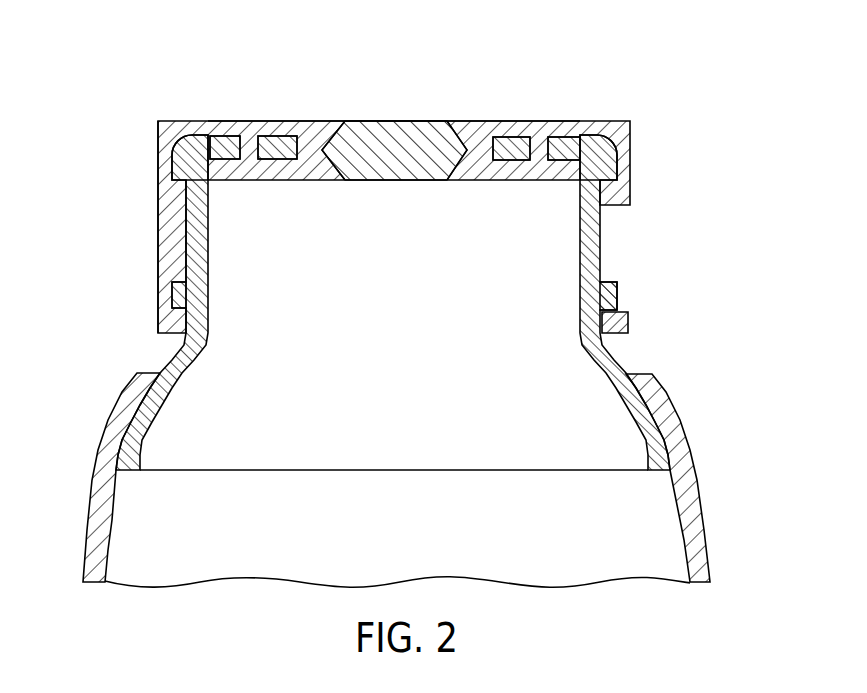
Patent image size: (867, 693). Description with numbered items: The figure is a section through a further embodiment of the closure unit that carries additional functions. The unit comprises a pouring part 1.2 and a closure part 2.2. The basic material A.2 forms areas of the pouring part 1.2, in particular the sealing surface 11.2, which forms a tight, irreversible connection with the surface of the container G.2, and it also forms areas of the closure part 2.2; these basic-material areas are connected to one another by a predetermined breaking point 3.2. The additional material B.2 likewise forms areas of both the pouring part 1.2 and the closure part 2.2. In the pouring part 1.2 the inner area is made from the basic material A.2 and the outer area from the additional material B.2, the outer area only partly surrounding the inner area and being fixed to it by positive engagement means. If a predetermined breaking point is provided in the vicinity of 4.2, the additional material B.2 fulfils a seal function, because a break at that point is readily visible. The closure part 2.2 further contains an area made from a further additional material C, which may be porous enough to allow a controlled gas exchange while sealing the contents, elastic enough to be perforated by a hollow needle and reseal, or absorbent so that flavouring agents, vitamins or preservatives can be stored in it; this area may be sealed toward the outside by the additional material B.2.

The additional material B.2 is at (615, 120).
The closure part 2.2 is at (489, 112).
The vicinity of a predetermined breaking point 4.2 is at (148, 232).
The further additional material C is at (403, 133).
The predetermined breaking point 3.2 is at (204, 113).
The basic material A.2 is at (592, 230).
The pouring part 1.2 is at (632, 278).
The sealing surface 11.2 is at (128, 386).
The container G.2 is at (698, 521).